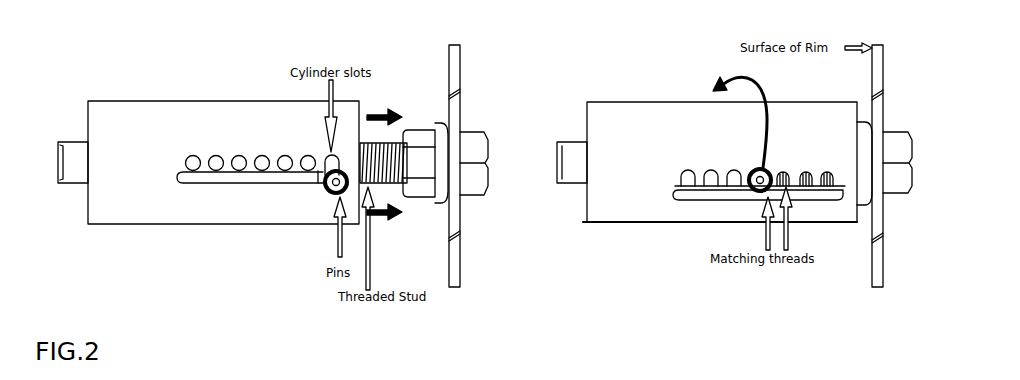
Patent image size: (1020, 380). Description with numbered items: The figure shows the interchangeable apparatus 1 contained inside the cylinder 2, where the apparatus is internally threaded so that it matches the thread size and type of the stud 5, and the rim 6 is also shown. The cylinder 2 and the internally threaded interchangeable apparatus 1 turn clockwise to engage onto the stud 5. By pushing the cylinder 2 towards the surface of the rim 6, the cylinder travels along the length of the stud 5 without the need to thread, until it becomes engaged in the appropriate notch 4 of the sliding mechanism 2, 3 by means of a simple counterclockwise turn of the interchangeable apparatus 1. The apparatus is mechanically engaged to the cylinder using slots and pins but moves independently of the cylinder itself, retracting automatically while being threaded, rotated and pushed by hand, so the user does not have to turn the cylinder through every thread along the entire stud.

The interchangeable apparatus 1 is at (152, 123).
The cylinder 2 is at (238, 182).
The sliding mechanism 3 is at (331, 193).
The notch 4 is at (280, 157).
The stud 5 is at (385, 148).
The rim 6 is at (456, 118).